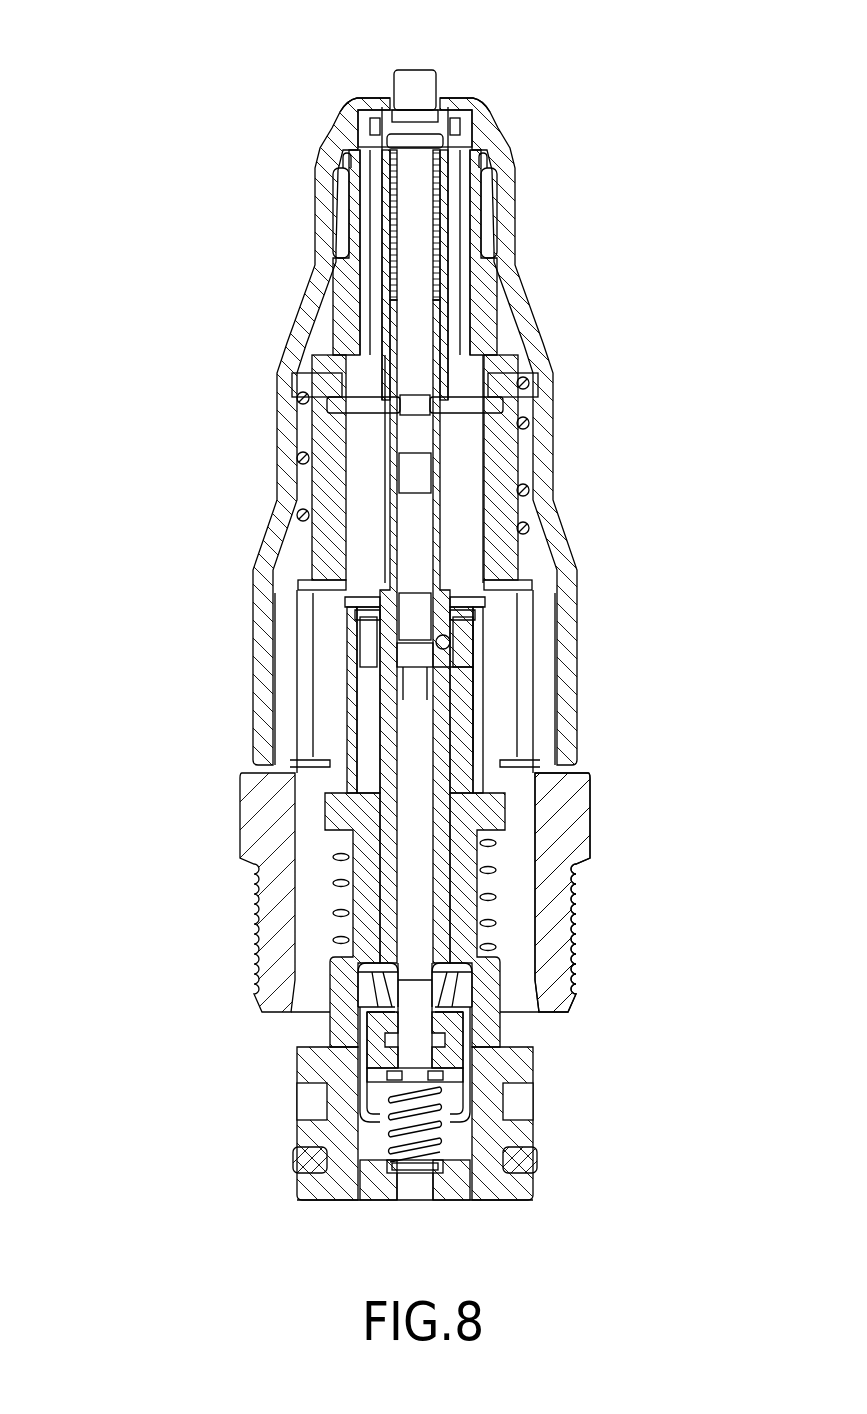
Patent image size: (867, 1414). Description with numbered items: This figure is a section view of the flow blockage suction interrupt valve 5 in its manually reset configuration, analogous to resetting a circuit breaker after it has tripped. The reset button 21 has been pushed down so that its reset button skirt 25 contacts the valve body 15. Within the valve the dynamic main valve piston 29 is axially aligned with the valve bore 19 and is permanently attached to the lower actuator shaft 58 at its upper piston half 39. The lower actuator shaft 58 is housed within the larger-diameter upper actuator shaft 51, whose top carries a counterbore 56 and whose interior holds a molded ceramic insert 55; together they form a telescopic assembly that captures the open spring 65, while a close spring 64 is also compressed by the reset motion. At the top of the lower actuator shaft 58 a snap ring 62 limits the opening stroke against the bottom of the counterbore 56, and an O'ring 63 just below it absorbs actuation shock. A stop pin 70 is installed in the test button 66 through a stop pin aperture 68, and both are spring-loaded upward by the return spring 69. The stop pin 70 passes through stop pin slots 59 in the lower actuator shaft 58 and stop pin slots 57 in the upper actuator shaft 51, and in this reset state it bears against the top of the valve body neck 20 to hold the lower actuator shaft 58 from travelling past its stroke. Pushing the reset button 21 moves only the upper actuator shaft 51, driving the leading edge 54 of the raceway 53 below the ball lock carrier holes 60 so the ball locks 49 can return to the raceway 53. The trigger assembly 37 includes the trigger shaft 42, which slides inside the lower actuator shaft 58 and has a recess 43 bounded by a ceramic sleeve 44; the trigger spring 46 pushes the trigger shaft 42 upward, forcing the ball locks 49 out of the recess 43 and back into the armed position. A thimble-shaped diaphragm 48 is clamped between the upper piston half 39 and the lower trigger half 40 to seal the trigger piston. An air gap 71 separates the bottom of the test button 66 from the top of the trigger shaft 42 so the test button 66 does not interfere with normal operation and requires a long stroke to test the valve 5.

The flow blockage suction interrupt valve 5 is at (142, 550).
The valve body 15 is at (258, 838).
The valve bore 19 is at (522, 947).
The valve body neck 20 is at (497, 485).
The reset button 21 is at (292, 335).
The reset button skirt 25 is at (262, 688).
The main valve piston 29 is at (343, 1083).
The trigger assembly 37 is at (633, 955).
The upper piston half 39 is at (457, 993).
The lower trigger half 40 is at (453, 1097).
The trigger shaft 42 is at (413, 832).
The recess 43 is at (423, 662).
The ceramic sleeve 44 is at (415, 637).
The trigger spring 46 is at (437, 1153).
The diaphragm 48 is at (453, 1100).
The ball locks 49 is at (450, 641).
The upper actuator shaft 51 is at (352, 682).
The raceway 53 is at (462, 652).
The leading edge 54 is at (457, 677).
The ceramic insert 55 is at (373, 740).
The counterbore 56 is at (372, 230).
The stop pin slots 57 is at (357, 498).
The lower actuator shaft 58 is at (390, 557).
The stop pin slots 59 is at (382, 432).
The ball lock carrier holes 60 is at (443, 614).
The snap ring 62 is at (465, 112).
The O'ring 63 is at (450, 135).
The close spring 64 is at (300, 400).
The open spring 65 is at (340, 922).
The test button 66 is at (413, 84).
The stop pin aperture 68 is at (423, 397).
The return spring 69 is at (438, 257).
The stop pin 70 is at (480, 413).
The air gap 71 is at (417, 472).